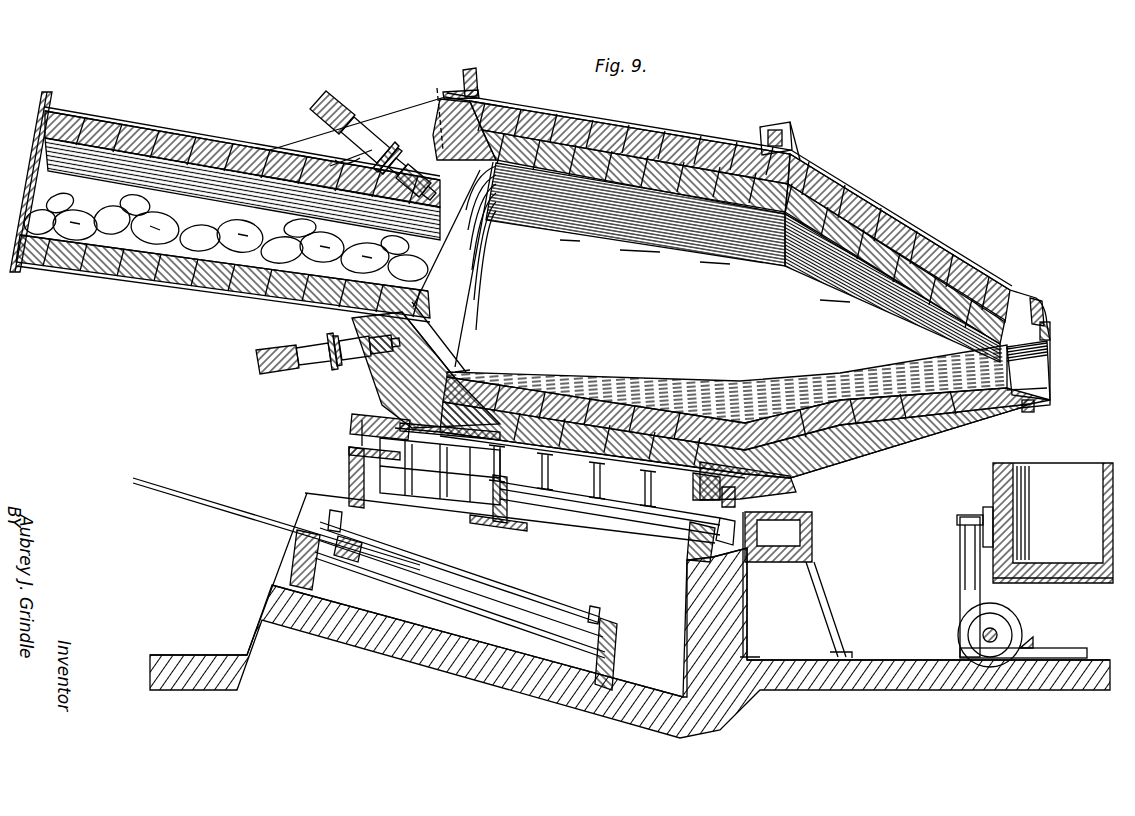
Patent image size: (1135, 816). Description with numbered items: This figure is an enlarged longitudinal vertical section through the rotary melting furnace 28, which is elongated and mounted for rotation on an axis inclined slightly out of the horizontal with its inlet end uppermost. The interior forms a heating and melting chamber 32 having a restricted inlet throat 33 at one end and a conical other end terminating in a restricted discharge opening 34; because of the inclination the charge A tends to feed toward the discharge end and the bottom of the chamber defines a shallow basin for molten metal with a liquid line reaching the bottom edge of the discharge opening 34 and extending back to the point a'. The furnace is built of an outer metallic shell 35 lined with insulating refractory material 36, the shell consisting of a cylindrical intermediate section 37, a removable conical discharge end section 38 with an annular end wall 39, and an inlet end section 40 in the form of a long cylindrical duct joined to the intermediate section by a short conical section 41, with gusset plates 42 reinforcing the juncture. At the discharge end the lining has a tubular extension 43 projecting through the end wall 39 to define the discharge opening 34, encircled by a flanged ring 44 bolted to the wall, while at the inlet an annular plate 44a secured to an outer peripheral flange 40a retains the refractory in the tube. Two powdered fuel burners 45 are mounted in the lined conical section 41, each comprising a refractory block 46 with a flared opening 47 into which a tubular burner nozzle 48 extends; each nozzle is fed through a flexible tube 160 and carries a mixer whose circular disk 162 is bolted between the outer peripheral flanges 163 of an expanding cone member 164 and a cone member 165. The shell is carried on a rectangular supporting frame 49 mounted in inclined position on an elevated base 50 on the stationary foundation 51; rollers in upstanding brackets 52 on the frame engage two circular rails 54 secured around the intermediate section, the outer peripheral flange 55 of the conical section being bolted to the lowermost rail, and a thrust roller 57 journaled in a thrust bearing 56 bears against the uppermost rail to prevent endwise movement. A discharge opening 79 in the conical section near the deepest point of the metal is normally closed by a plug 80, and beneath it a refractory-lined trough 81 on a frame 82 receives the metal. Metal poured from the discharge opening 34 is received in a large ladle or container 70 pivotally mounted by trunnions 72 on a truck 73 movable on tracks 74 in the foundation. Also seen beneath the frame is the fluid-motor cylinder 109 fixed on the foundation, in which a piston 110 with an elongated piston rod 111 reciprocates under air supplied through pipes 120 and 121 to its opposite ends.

The rotary melting furnace 28 is at (890, 203).
The heating and melting chamber 32 is at (743, 262).
The inlet throat 33 is at (225, 237).
The outlet or discharge opening 34 is at (1045, 370).
The outer metallic casing or shell 35 is at (707, 125).
The refractory lining 36 is at (835, 186).
The intermediate section 37 is at (620, 128).
The conical discharge end section 38 is at (1012, 296).
The annular end wall 39 is at (1040, 302).
The inlet end section 40 is at (188, 142).
The outer peripheral flange 40a is at (52, 100).
The short conical section 41 is at (452, 113).
The gusset plates or braces 42 is at (365, 118).
The tubular extension 43 is at (1052, 345).
The flanged ring 44 is at (1052, 330).
The annular plate 44a is at (40, 103).
The powdered fuel burner 45 is at (450, 197).
The burner block 46 is at (480, 115).
The opening 47 is at (452, 165).
The burner nozzle 48 is at (404, 158).
The supporting frame 49 is at (510, 532).
The elevated base 50 is at (700, 598).
The foundation 51 is at (900, 658).
The upstanding brackets 52 is at (365, 428).
The circular rails 54 is at (473, 68).
The outer peripheral flange 55 is at (795, 138).
The thrust bearing 56 is at (440, 505).
The thrust roller 57 is at (355, 470).
The container 70 is at (1060, 480).
The trunnions 72 is at (970, 517).
The truck 73 is at (1005, 662).
The tracks 74 is at (985, 662).
The discharge opening 79 is at (755, 405).
The plug 80 is at (785, 490).
The trough 81 is at (812, 545).
The frame 82 is at (835, 600).
The cylinder 109 is at (545, 615).
The piston 110 is at (365, 548).
The piston rod 111 is at (222, 500).
The pipe 120 is at (345, 522).
The pipe 121 is at (605, 612).
The flexible tubes 160 is at (316, 100).
The circular disk 162 is at (338, 160).
The outer peripheral flanges 163 is at (375, 125).
The expanding cone member 164 is at (335, 118).
The cone member 165 is at (345, 372).
The charge A is at (820, 385).
The point a' is at (489, 353).